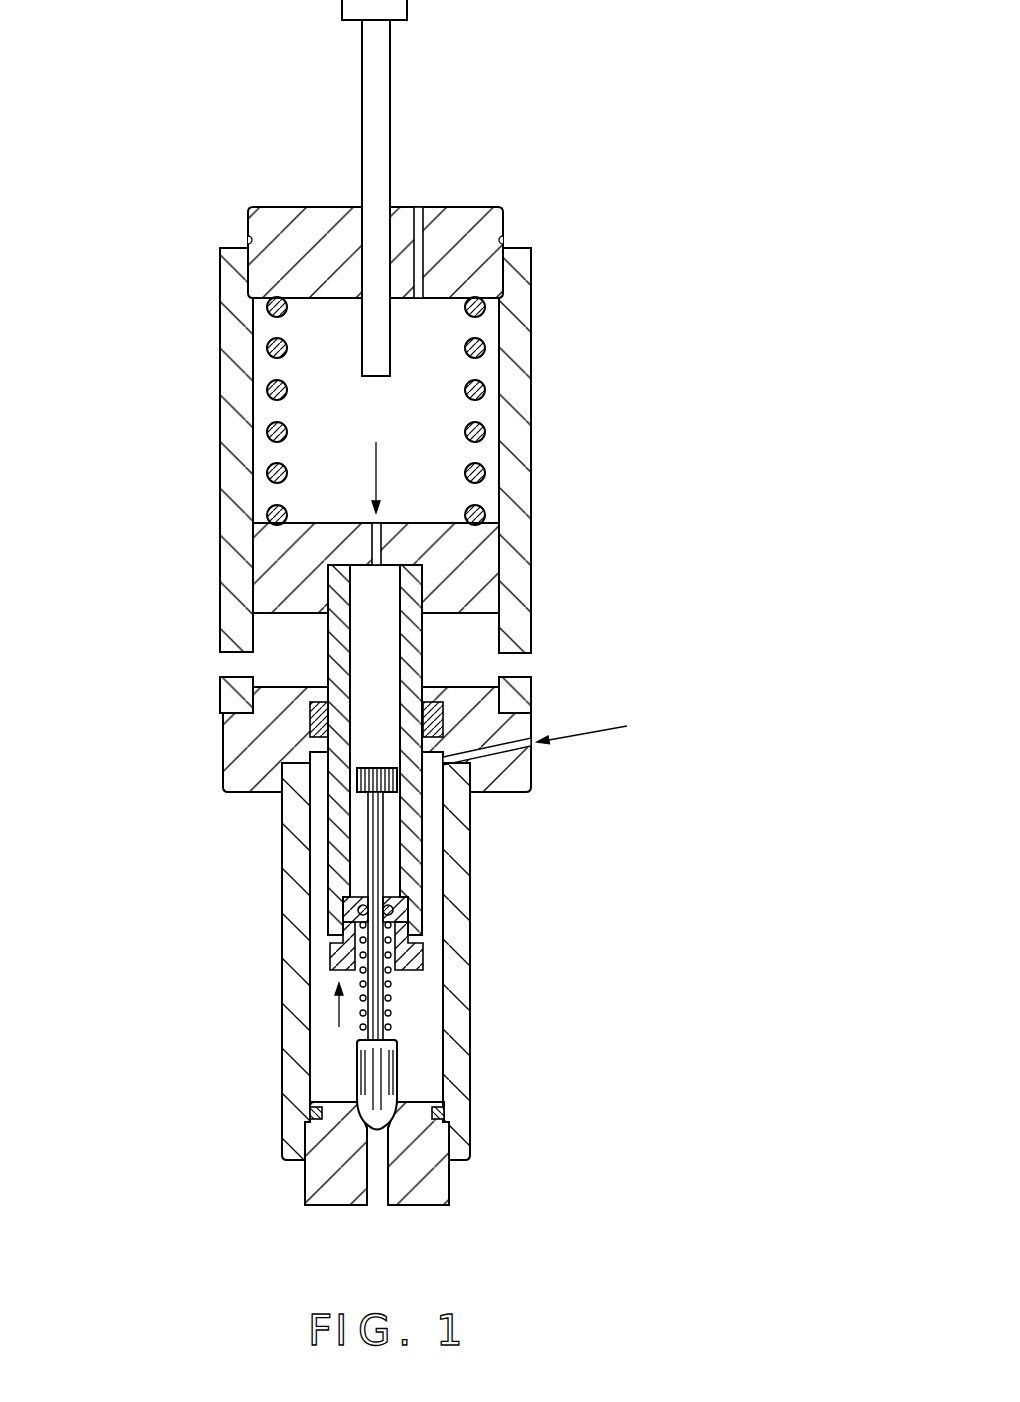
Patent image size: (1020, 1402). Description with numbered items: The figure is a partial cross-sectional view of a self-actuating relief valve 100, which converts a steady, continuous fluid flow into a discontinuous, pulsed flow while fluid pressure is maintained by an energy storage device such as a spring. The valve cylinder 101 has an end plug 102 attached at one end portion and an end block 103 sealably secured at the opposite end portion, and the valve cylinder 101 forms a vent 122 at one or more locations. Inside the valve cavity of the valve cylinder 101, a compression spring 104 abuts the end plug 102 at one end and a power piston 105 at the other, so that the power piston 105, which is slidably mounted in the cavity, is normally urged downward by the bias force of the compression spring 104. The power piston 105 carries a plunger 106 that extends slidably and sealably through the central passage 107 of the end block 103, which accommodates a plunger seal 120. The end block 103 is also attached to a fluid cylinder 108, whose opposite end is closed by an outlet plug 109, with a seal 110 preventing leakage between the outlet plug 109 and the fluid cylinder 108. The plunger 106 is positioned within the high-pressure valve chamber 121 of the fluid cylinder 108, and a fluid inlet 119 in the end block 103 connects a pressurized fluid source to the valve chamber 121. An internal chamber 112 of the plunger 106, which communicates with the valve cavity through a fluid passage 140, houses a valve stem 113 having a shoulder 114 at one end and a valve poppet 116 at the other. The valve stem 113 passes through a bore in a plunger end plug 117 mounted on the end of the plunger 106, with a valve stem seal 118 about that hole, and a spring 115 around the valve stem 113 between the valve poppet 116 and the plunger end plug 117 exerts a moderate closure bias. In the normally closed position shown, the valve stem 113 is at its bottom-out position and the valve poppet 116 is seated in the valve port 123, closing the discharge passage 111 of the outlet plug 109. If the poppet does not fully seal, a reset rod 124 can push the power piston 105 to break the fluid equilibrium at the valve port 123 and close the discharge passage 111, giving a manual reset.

The self-actuating relief valve 100 is at (661, 101).
The valve cylinder 101 is at (517, 298).
The end plug 102 is at (467, 220).
The end block 103 is at (513, 770).
The compression spring 104 is at (485, 388).
The power piston 105 is at (283, 587).
The plunger 106 is at (340, 647).
The central passage 107 is at (427, 682).
The fluid cylinder 108 is at (460, 895).
The outlet plug 109 is at (328, 1187).
The seal 110 is at (442, 1113).
The discharge passage 111 is at (375, 1187).
The internal chamber 112 is at (383, 590).
The valve stem 113 is at (378, 835).
The shoulder 114 is at (358, 787).
The spring 115 is at (393, 998).
The valve poppet 116 is at (397, 1073).
The plunger end plug 117 is at (340, 955).
The valve stem seal 118 is at (345, 915).
The fluid inlet 119 is at (532, 742).
The plunger seal 120 is at (310, 720).
The valve chamber 121 is at (425, 1032).
The vent 122 is at (419, 207).
The valve port 123 is at (397, 1100).
The reset rod 124 is at (390, 60).
The fluid passage 140 is at (383, 537).